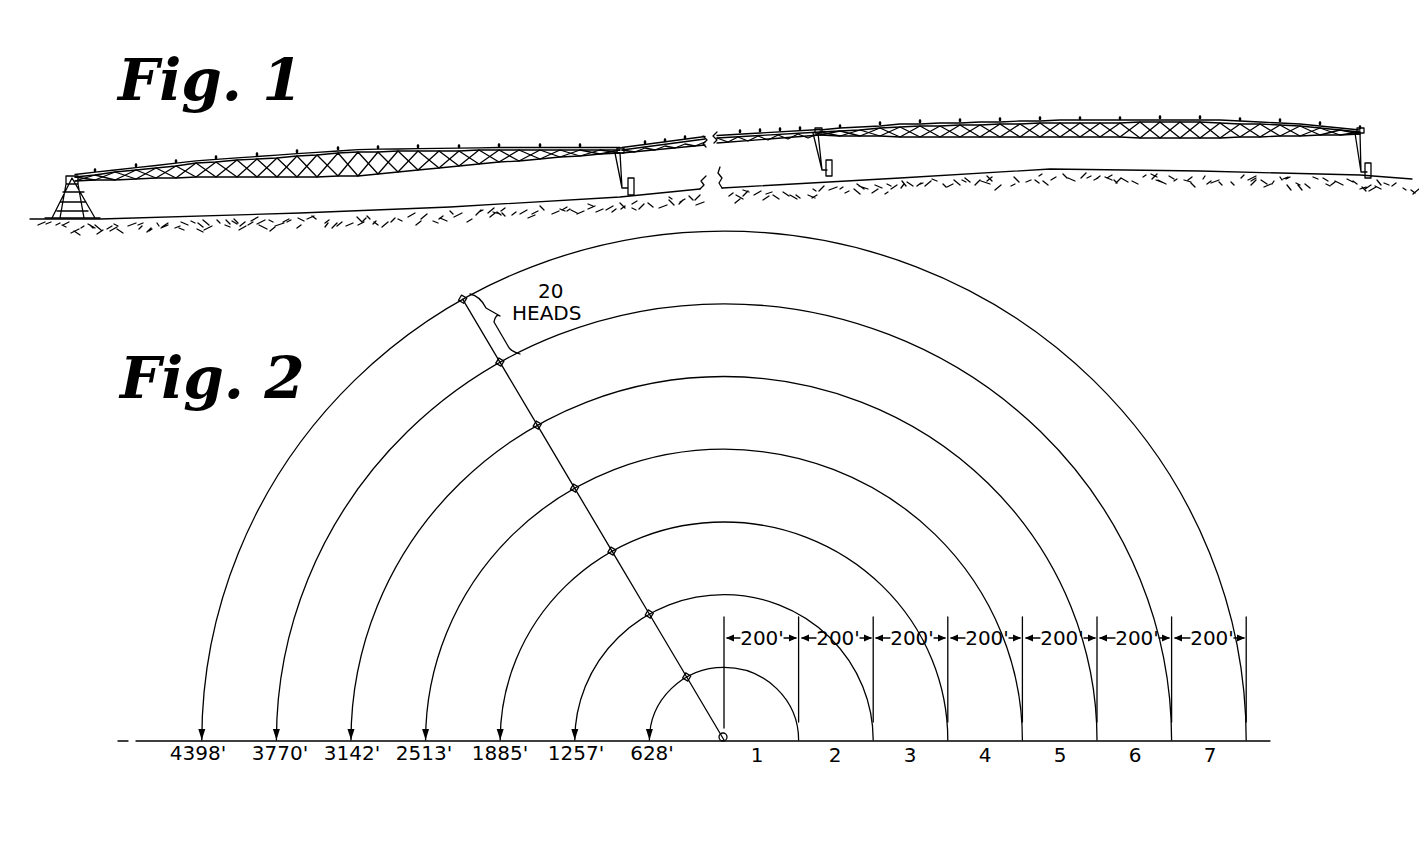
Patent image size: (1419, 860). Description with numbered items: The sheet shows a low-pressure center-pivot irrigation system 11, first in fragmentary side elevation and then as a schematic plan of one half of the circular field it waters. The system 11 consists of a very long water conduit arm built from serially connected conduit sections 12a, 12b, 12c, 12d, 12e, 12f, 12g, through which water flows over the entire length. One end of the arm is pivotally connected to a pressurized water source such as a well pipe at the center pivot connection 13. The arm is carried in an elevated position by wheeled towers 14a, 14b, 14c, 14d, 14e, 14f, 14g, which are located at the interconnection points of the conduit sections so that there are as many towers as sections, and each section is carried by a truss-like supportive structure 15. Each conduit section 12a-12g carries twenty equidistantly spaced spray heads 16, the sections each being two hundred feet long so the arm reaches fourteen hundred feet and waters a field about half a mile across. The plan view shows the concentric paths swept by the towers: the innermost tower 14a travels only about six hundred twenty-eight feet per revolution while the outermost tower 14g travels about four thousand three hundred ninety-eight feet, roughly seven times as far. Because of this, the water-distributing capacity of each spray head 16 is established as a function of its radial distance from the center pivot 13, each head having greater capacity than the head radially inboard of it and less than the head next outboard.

In FIG. 1, the center-pivot irrigation system 11 is at (870, 104).
In FIG. 2, the center-pivot irrigation system 11 is at (578, 465).
In FIG. 1, the conduit section 12a is at (320, 140).
In FIG. 2, the conduit section 12a is at (697, 701).
In FIG. 1, the conduit section 12b is at (676, 139).
In FIG. 2, the conduit section 12b is at (662, 650).
In FIG. 2, the conduit section 12c is at (620, 588).
In FIG. 2, the conduit section 12d is at (586, 523).
In FIG. 2, the conduit section 12e is at (552, 460).
In FIG. 1, the conduit section 12f is at (790, 131).
In FIG. 2, the conduit section 12f is at (512, 391).
In FIG. 1, the conduit section 12g is at (1229, 122).
In FIG. 2, the conduit section 12g is at (476, 322).
In FIG. 1, the center pivot connection 13 is at (96, 206).
In FIG. 2, the center pivot connection 13 is at (733, 738).
In FIG. 1, the wheeled tower 14a is at (614, 179).
In FIG. 2, the wheeled tower 14a is at (688, 670).
In FIG. 2, the wheeled tower 14b is at (655, 614).
In FIG. 2, the wheeled tower 14c is at (620, 554).
In FIG. 2, the wheeled tower 14d is at (582, 489).
In FIG. 2, the wheeled tower 14e is at (545, 427).
In FIG. 1, the wheeled tower 14f is at (813, 164).
In FIG. 2, the wheeled tower 14f is at (512, 360).
In FIG. 1, the wheeled tower 14g is at (1354, 158).
In FIG. 2, the wheeled tower 14g is at (461, 295).
In FIG. 1, the supportive structure 15 is at (338, 178).
In FIG. 1, the spray heads 16 is at (421, 148).